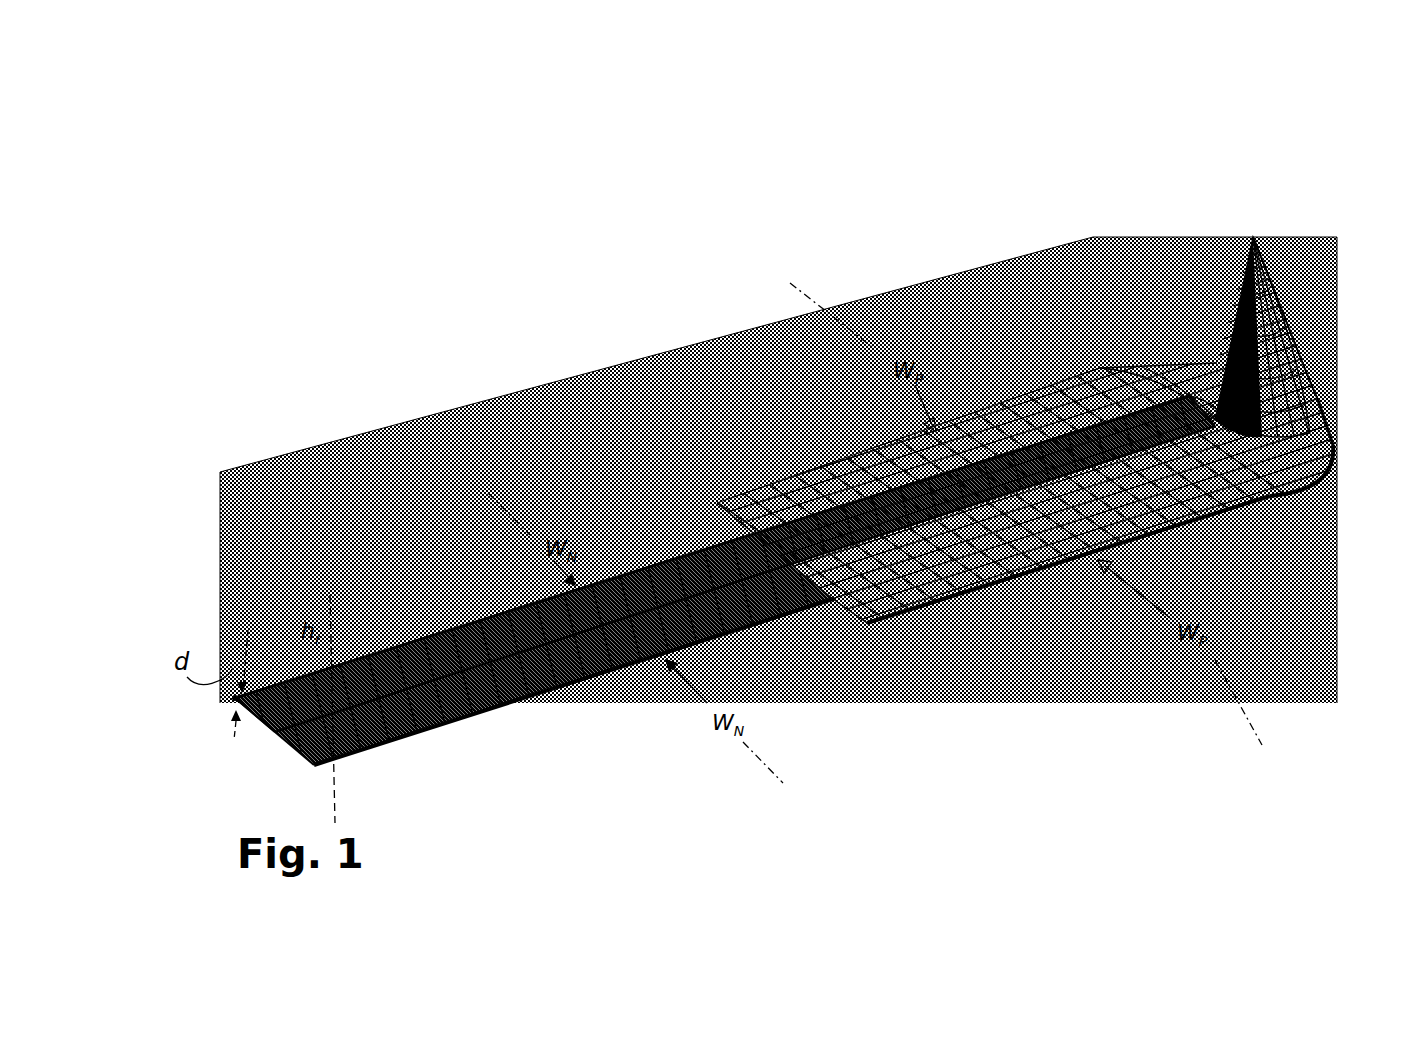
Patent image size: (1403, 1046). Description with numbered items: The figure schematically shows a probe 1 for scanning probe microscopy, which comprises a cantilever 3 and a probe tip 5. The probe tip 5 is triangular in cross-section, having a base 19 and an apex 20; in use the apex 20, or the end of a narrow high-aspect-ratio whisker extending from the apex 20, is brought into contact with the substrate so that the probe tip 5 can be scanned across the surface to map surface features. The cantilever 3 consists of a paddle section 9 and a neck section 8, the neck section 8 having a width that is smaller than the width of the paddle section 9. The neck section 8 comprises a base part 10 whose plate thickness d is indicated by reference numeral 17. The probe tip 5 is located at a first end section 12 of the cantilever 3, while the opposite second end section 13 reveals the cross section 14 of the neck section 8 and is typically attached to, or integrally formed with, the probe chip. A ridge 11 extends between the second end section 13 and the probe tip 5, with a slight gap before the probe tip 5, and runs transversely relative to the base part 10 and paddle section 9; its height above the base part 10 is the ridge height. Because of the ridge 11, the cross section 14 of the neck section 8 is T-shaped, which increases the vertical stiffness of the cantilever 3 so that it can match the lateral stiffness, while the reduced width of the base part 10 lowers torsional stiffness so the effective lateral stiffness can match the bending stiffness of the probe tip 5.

The probe 1 is at (672, 232).
The cantilever 3 is at (700, 548).
The probe tip 5 is at (1290, 308).
The neck section 8 is at (593, 683).
The paddle section 9 is at (921, 613).
The base part 10 is at (455, 727).
The ridge 11 is at (405, 640).
The first end section 12 is at (1320, 400).
The second end section 13 is at (297, 755).
The cross section 14 is at (258, 736).
The plate thickness 17 is at (220, 698).
The base 19 is at (1320, 462).
The apex 20 is at (1253, 237).